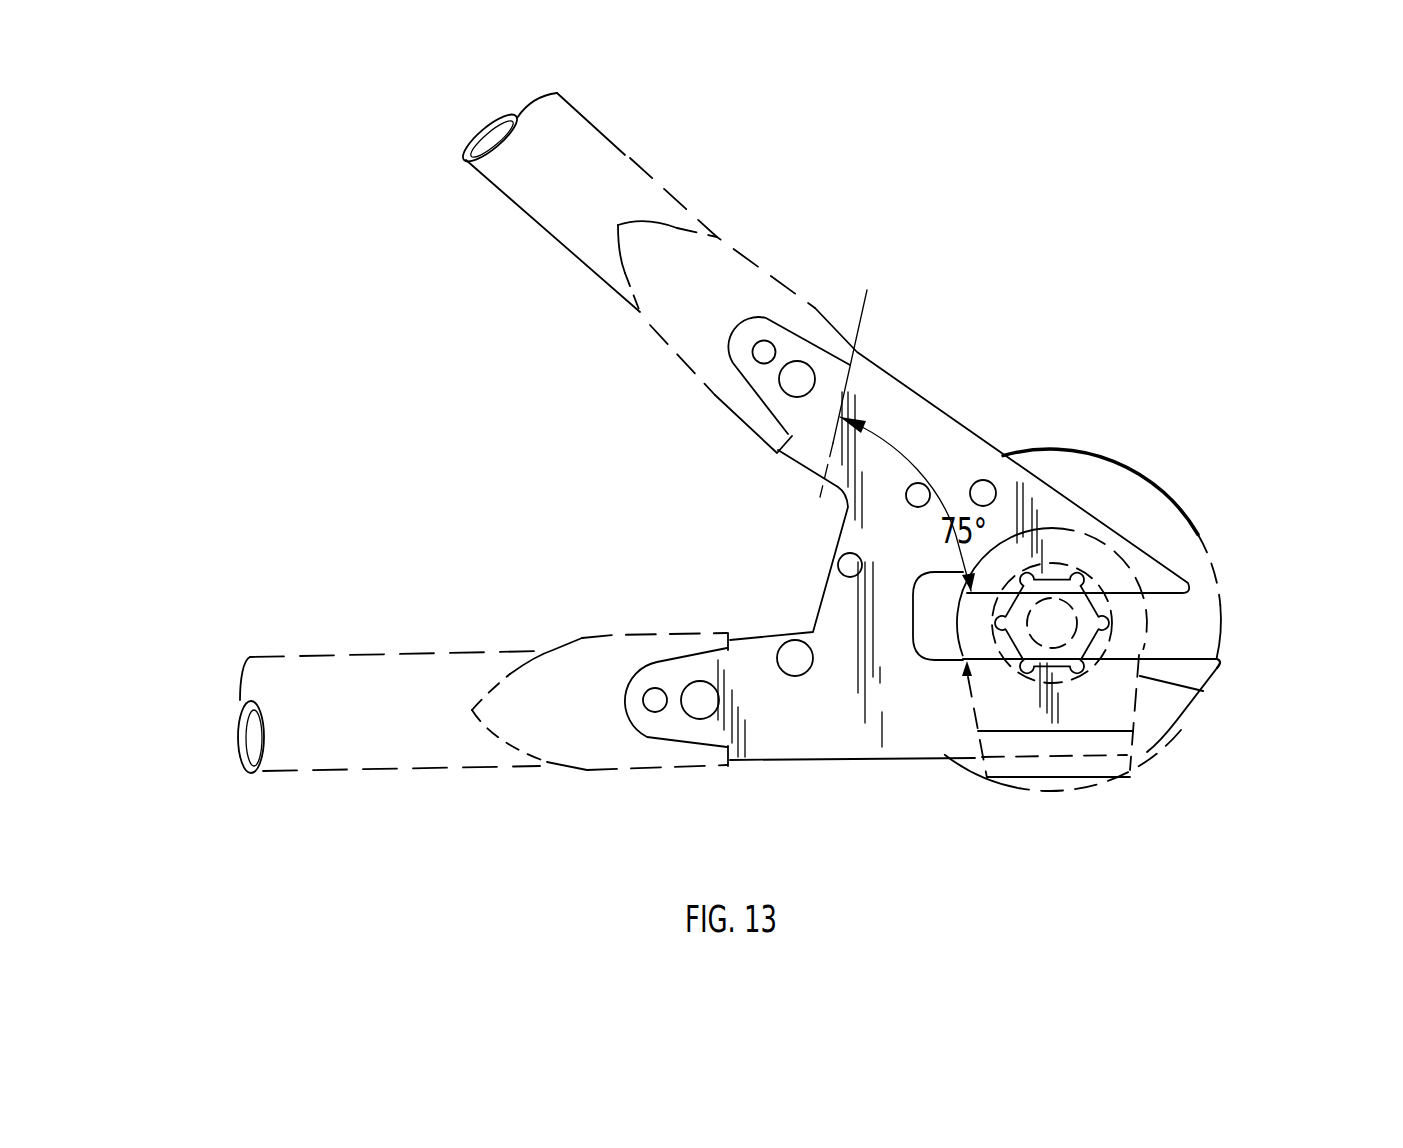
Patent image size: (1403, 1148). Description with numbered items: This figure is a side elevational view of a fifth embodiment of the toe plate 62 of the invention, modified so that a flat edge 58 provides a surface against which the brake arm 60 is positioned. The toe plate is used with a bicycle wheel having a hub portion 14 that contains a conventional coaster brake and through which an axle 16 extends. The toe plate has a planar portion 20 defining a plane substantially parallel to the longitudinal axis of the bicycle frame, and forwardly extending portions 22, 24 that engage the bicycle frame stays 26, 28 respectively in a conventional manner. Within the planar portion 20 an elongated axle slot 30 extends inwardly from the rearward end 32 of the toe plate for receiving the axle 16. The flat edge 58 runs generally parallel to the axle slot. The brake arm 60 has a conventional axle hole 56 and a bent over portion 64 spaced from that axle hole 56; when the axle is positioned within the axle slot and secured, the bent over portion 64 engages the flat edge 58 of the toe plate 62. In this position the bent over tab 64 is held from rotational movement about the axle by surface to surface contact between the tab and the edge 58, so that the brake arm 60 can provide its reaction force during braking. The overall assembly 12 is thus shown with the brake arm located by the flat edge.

The tubing cutter tool 12 is at (1143, 460).
The hub portion 14 is at (1040, 450).
The axle 16 is at (1100, 624).
The planar portion 20 is at (820, 717).
The forwardly extending portion 22 is at (787, 350).
The forwardly extending portion 24 is at (648, 723).
The bicycle frame stay 26 is at (587, 120).
The bicycle frame stay 28 is at (337, 768).
The axle slot 30 is at (963, 655).
The rearward end 32 is at (1180, 720).
The axle hole 56 is at (1090, 587).
The flat edge 58 is at (1077, 757).
The brake arm 60 is at (1180, 720).
The toe plate 62 is at (918, 727).
The bent over portion 64 is at (1063, 770).